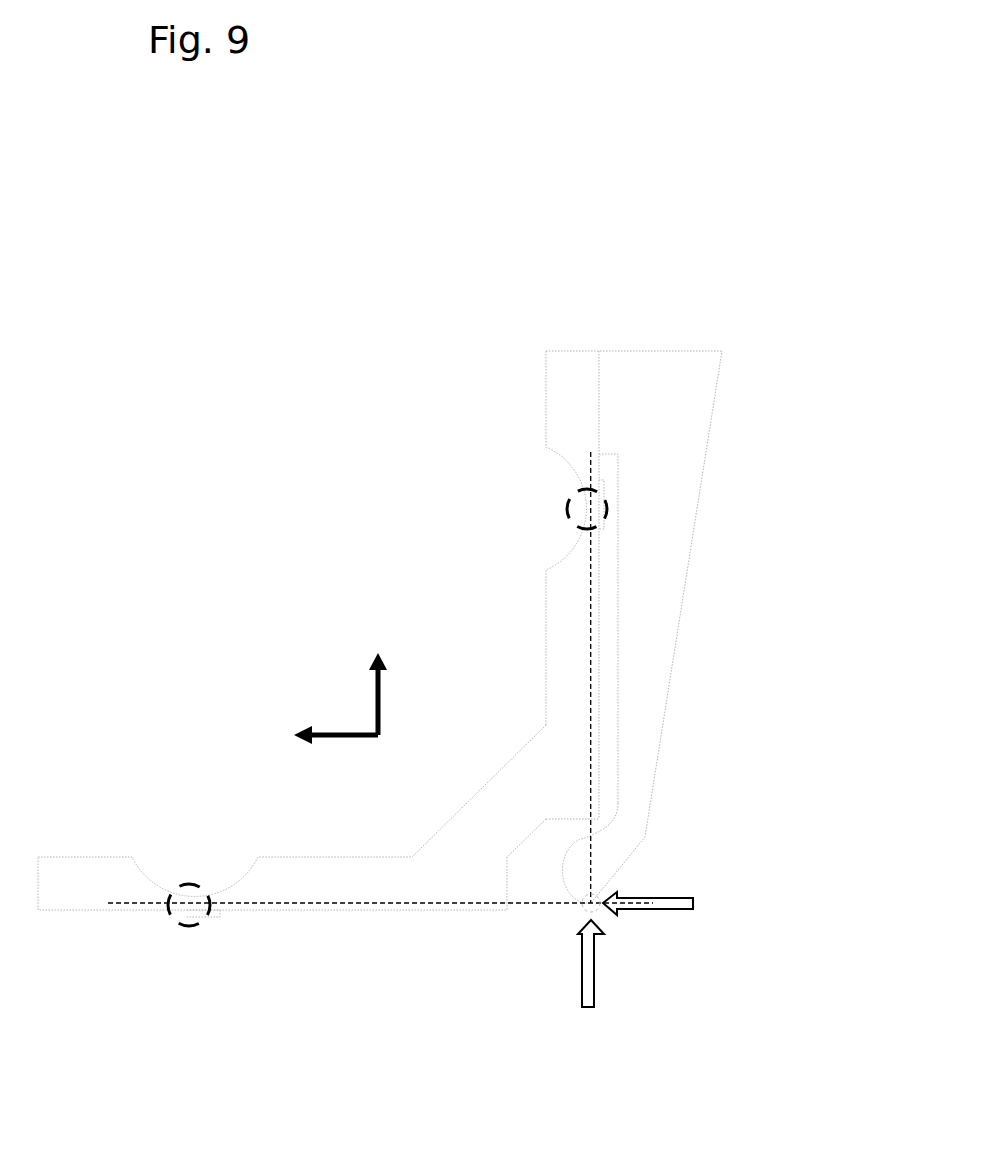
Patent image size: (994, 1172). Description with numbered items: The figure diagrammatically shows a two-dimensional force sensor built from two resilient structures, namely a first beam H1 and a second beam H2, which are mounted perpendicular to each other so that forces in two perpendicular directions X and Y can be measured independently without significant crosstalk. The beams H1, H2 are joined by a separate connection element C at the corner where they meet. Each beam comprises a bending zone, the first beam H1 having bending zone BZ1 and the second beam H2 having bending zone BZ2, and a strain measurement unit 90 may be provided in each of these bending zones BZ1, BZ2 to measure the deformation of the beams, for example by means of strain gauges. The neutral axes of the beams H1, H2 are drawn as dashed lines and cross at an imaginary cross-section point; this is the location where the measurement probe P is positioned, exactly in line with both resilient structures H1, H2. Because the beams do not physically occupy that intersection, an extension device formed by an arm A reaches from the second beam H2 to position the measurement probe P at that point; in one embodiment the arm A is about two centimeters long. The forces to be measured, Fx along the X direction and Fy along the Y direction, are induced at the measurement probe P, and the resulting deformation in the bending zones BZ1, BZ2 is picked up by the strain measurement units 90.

The strain measurement unit 90 is at (587, 509).
The bending zone BZ1 is at (189, 905).
The bending zone BZ2 is at (587, 509).
The first resilient structure H1 is at (321, 876).
The second resilient structure H2 is at (557, 620).
The connection element C is at (514, 798).
The arm A is at (635, 657).
The measurement probe P is at (591, 903).
The X direction X is at (391, 694).
The Y direction Y is at (332, 749).
The force in X direction Fx is at (577, 968).
The force in Y direction Fy is at (648, 888).